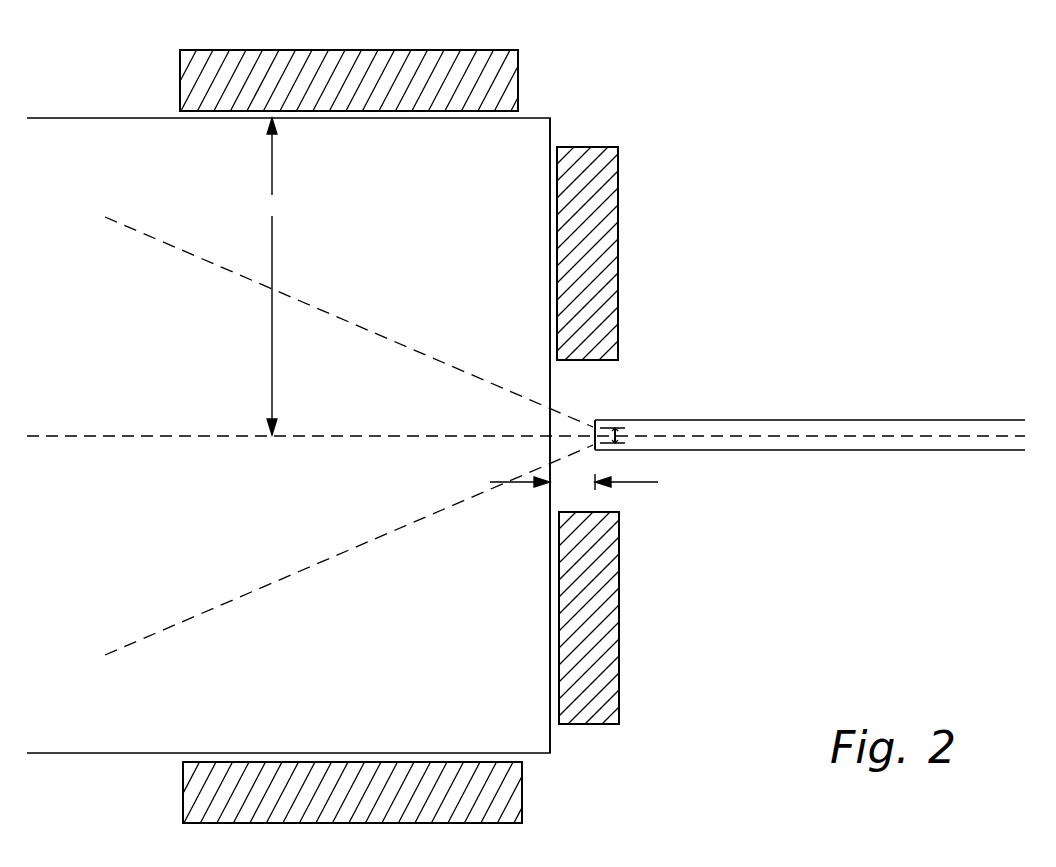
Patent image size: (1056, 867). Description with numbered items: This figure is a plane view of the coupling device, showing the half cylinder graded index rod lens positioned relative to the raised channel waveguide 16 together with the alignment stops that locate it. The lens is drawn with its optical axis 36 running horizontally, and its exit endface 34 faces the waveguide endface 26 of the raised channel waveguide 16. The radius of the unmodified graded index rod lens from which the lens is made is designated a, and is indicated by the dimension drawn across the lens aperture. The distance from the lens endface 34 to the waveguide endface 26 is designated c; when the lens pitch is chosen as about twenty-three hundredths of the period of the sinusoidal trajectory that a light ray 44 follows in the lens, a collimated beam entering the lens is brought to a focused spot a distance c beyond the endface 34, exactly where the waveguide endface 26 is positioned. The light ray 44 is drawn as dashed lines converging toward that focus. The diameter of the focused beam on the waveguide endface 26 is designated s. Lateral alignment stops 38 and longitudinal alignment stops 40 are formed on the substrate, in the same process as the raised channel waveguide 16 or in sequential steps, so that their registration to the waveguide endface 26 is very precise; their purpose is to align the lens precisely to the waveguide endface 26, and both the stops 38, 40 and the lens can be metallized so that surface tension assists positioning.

The raised channel waveguide 16 is at (742, 451).
The waveguide endface 26 is at (594, 423).
The endface 34 is at (550, 364).
The optical axis 36 is at (108, 437).
The lateral alignment stops 38 is at (518, 87).
The longitudinal alignment stops 40 is at (618, 205).
The light ray 44 is at (373, 332).
The radius of the unmodified GRIN rod lens a is at (271, 276).
The distance from lens endface to waveguide endface c is at (574, 483).
The diameter of the focused beam s is at (620, 443).